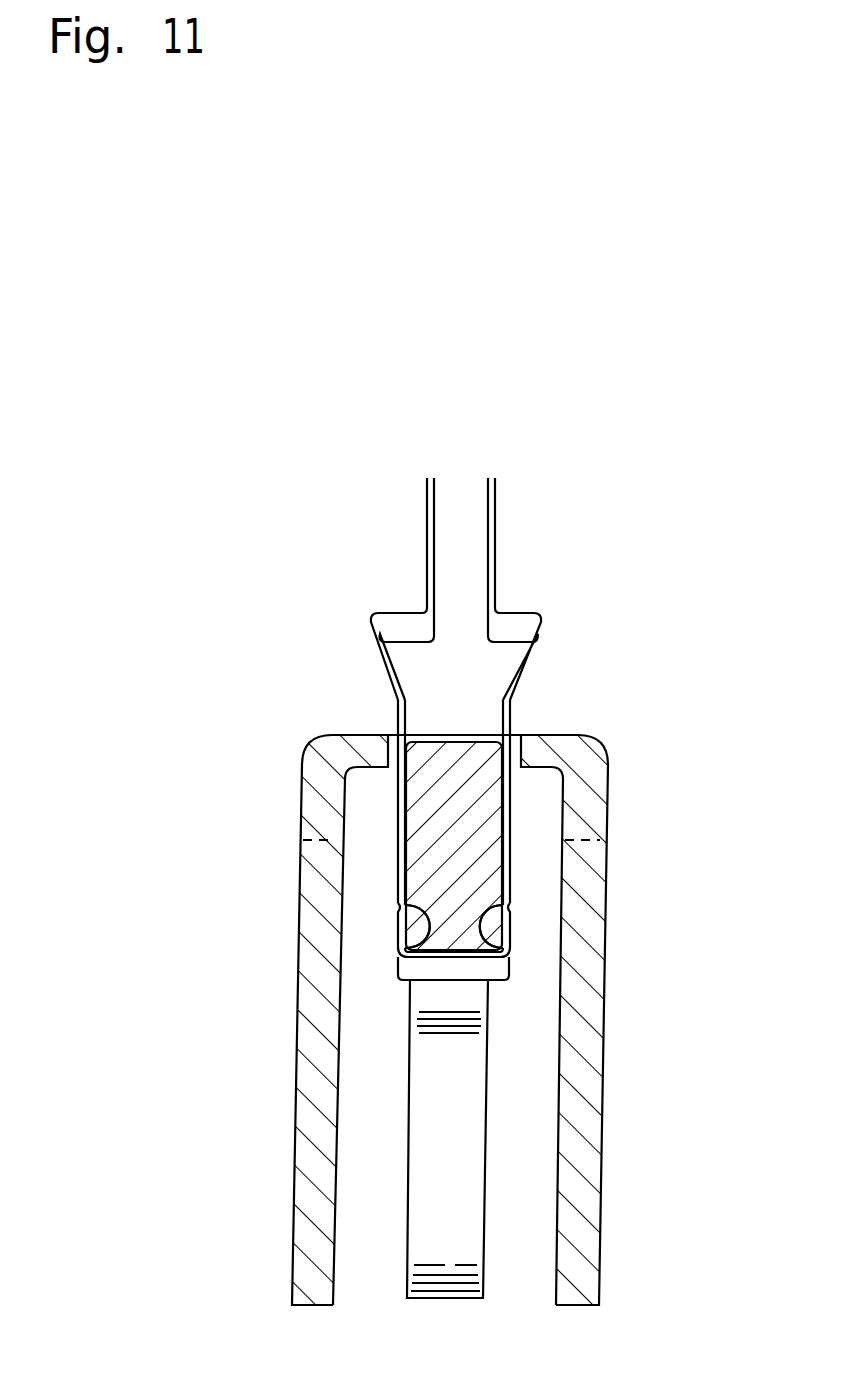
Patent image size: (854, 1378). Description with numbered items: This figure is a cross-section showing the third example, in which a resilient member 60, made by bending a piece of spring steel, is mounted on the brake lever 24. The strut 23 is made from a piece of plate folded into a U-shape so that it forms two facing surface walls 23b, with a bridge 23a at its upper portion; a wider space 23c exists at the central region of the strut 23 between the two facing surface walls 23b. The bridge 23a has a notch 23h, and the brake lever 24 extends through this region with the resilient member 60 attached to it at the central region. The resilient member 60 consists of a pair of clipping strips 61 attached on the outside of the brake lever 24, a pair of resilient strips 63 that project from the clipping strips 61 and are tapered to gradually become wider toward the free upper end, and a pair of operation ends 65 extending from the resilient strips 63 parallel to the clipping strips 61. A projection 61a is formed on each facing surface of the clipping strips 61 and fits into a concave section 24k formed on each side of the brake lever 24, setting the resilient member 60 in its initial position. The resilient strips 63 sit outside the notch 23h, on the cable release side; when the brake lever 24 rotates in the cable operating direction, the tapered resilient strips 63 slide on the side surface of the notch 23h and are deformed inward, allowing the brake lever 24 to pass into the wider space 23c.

The strut 23 is at (618, 749).
The bridge 23a is at (338, 735).
The facing surface walls 23b is at (293, 1097).
The wider space 23c is at (515, 1196).
The notch 23h is at (517, 743).
The brake lever 24 is at (455, 690).
The concave section 24k is at (412, 918).
The resilient member 60 is at (560, 614).
The clipping strips 61 is at (400, 857).
The projection 61a is at (410, 947).
The resilient strips 63 is at (370, 636).
The operation ends 65 is at (427, 520).